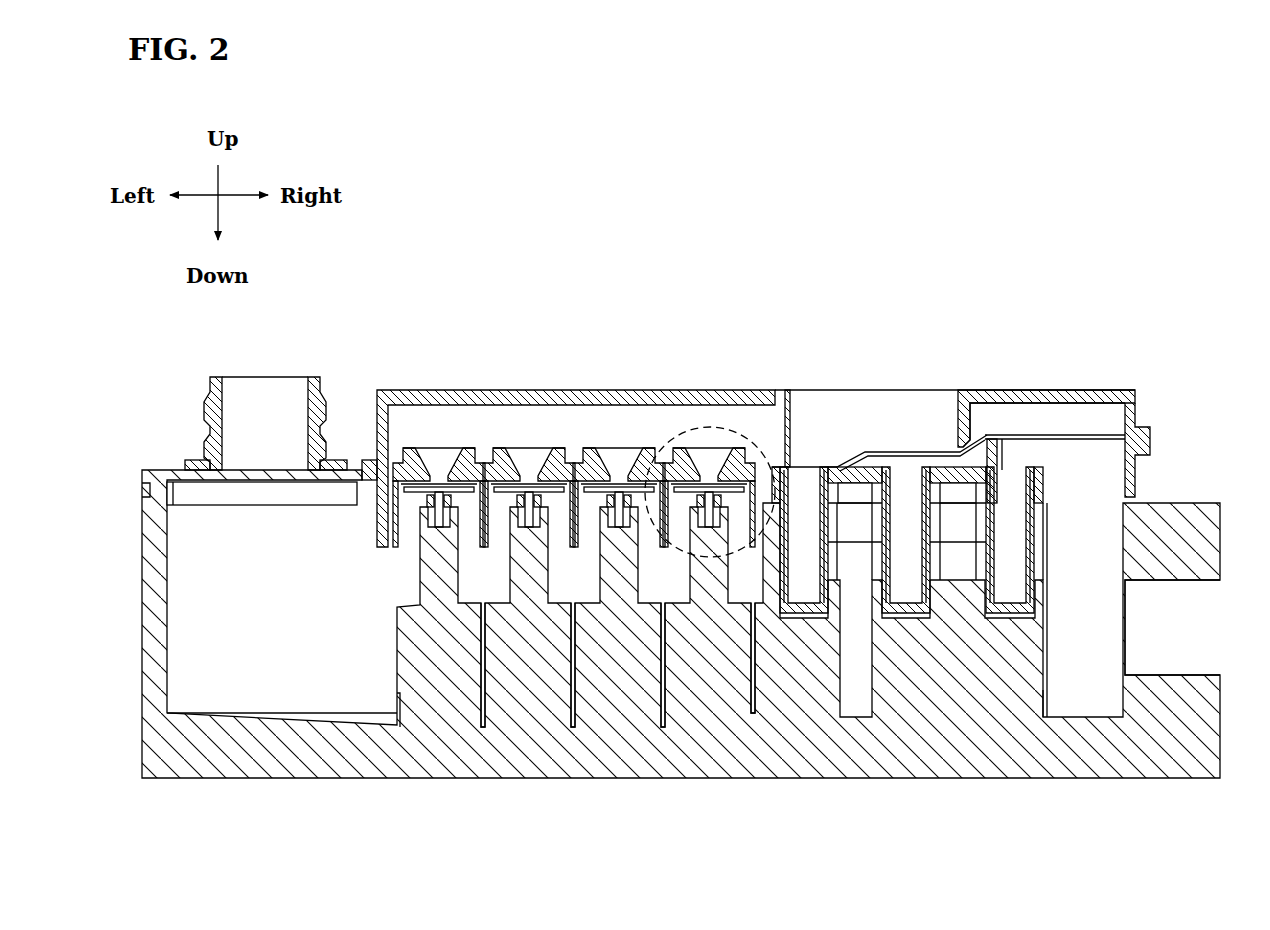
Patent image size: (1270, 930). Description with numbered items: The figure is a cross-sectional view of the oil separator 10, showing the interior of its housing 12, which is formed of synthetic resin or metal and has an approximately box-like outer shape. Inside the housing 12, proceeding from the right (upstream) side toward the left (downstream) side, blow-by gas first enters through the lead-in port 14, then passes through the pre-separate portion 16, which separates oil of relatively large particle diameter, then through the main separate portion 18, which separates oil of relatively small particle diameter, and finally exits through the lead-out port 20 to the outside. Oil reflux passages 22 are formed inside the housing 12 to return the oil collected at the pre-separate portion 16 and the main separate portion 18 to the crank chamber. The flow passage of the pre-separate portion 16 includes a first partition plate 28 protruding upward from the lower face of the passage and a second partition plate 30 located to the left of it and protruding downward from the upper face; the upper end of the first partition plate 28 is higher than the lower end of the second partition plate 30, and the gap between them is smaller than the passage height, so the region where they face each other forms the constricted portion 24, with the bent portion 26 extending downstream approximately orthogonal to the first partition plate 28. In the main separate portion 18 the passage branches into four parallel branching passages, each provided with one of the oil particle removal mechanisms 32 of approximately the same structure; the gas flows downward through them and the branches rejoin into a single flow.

The oil separator 10 is at (1107, 327).
The housing 12 is at (925, 785).
The lead-in port 14 is at (1212, 587).
The pre-separate portion 16 is at (864, 389).
The main separate portion 18 is at (713, 391).
The lead-out port 20 is at (231, 397).
The oil reflux passages 22 is at (397, 700).
The constricted portion 24 is at (982, 429).
The bent portion 26 is at (961, 461).
The first partition plate 28 is at (996, 441).
The second partition plate 30 is at (966, 447).
The oil particle removal mechanisms 32 is at (711, 445).